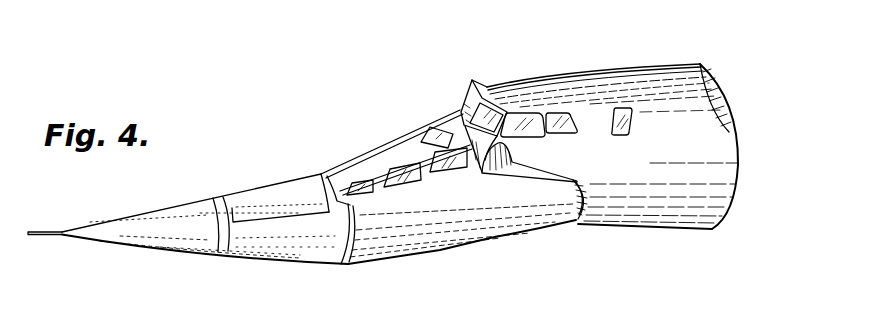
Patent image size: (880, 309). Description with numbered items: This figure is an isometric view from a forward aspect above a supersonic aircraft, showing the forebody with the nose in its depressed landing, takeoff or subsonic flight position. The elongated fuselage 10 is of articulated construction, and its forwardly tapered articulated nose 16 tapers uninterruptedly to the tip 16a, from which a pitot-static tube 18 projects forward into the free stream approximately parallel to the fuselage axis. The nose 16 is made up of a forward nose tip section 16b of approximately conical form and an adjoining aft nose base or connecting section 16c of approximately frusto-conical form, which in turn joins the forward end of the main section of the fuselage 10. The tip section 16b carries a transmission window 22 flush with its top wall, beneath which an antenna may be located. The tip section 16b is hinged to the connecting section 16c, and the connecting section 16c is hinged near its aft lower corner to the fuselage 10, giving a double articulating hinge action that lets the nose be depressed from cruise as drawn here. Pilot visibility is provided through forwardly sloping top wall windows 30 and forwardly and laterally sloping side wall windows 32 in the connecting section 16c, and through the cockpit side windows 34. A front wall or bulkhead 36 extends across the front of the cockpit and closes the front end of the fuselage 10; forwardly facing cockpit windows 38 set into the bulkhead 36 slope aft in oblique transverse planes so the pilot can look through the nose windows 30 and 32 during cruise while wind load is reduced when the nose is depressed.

The fuselage 10 is at (657, 61).
The nose 16 is at (256, 184).
The tip 16a is at (66, 229).
The nose tip section 16b is at (138, 246).
The nose base or connecting section 16c is at (420, 252).
The pitot-static tube 18 is at (44, 229).
The transmission window 22 is at (283, 213).
The top wall windows 30 is at (440, 141).
The side wall windows 32 is at (428, 172).
The cockpit side windows 34 is at (555, 120).
The front wall or bulkhead 36 is at (512, 168).
The forwardly facing cockpit windows 38 is at (484, 112).